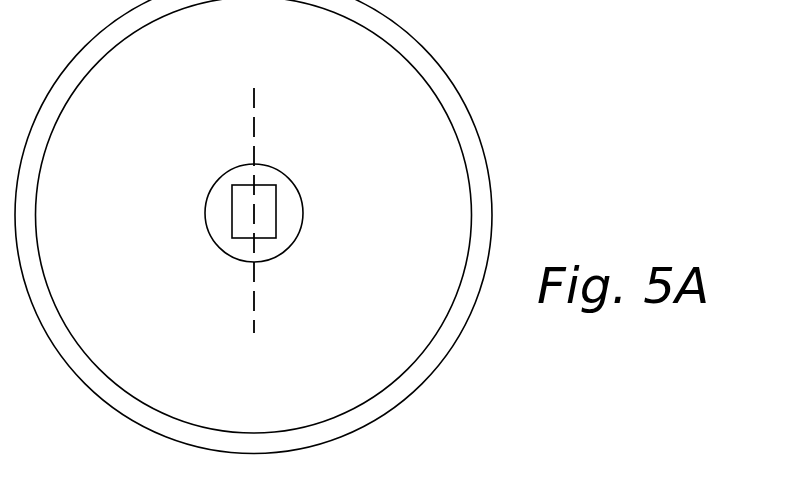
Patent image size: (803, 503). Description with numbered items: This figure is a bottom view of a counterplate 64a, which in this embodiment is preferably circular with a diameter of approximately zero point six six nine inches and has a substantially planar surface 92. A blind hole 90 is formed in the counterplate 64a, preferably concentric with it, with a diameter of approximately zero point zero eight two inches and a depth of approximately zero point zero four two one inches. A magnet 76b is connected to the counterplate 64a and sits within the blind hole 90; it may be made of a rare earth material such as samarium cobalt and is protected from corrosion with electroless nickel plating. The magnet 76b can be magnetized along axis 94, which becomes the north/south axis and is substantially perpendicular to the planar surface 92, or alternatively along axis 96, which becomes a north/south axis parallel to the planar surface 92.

The counterplate 64a is at (432, 372).
The planar surface 92 is at (440, 163).
The blind hole 90 is at (297, 240).
The axis 94 is at (252, 212).
The magnet 76b is at (258, 202).
The axis 96 is at (255, 294).